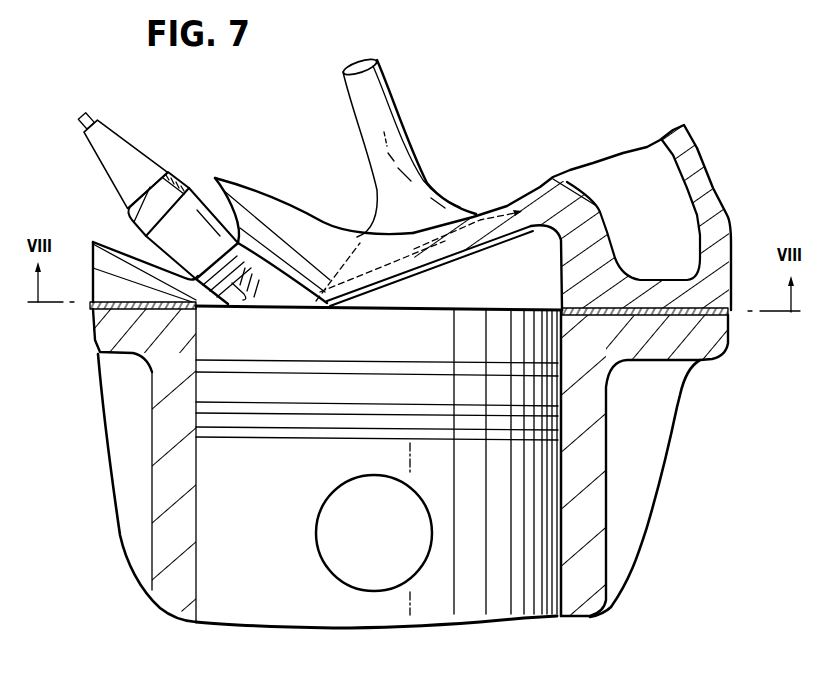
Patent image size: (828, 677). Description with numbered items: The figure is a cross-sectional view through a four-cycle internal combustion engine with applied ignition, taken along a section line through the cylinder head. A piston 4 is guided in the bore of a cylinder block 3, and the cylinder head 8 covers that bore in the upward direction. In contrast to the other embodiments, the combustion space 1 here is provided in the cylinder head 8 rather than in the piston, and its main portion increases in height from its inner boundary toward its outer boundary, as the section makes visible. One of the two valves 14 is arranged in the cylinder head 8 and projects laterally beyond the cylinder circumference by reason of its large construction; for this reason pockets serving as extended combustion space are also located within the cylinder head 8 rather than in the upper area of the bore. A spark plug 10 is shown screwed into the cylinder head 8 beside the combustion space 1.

The combustion space 1 is at (475, 291).
The cylinder block 3 is at (163, 590).
The piston 4 is at (247, 605).
The cylinder head 8 is at (305, 227).
The spark plug 10 is at (148, 168).
The valve 14 is at (400, 130).